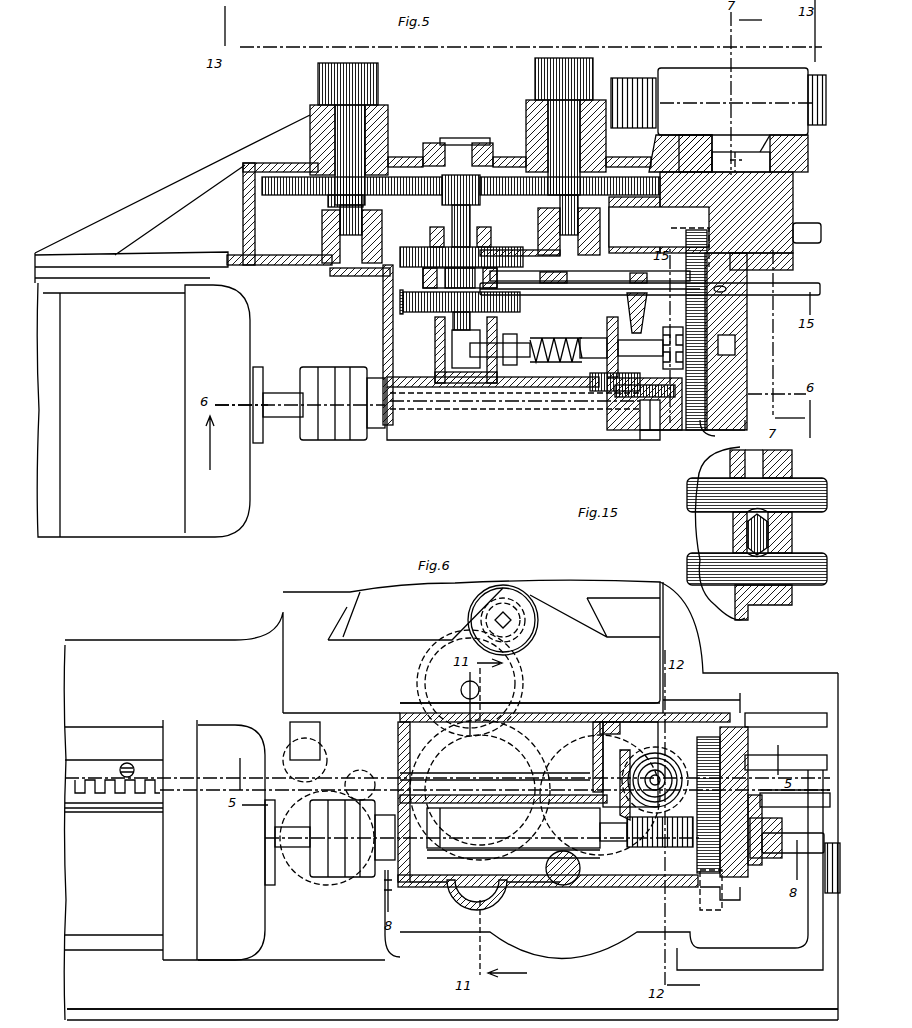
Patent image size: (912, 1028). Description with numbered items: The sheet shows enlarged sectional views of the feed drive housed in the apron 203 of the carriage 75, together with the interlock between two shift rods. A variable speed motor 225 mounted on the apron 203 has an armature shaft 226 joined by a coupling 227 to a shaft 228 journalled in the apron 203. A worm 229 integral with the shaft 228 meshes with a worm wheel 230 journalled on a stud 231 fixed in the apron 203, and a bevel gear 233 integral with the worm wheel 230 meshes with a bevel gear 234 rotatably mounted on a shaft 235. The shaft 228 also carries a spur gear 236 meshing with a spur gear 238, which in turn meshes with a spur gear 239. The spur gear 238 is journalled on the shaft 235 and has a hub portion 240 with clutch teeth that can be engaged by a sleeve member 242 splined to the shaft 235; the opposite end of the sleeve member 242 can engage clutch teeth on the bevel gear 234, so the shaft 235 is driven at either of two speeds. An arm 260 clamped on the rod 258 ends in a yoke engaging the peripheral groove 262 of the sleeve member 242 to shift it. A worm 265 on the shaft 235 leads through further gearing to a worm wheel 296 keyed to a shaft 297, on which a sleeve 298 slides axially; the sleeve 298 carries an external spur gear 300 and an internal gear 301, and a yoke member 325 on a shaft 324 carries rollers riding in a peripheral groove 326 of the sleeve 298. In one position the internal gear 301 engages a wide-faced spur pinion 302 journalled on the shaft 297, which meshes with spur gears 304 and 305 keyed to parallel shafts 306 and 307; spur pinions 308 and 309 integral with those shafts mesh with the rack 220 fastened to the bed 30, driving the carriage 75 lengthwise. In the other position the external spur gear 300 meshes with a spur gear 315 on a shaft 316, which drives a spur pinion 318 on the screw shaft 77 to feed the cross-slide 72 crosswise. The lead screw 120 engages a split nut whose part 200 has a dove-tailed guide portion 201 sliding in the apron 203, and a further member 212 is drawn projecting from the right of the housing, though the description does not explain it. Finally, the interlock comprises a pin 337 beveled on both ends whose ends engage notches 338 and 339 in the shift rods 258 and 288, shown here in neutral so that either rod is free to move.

In FIG. 6, the bed 30 is at (420, 995).
In FIG. 6, the cross-slide 72 is at (309, 593).
In FIG. 6, the carriage 75 is at (202, 650).
In FIG. 6, the screw shaft 77 is at (508, 617).
In FIG. 5, the lead screw 120 is at (643, 80).
In FIG. 6, the lead screw 120 is at (824, 890).
In FIG. 5, the split nut part 200 is at (773, 70).
In FIG. 5, the dove-tailed guide portion 201 is at (770, 150).
In FIG. 5, the apron 203 is at (535, 432).
In FIG. 5, the shaft 212 is at (803, 226).
In FIG. 6, the shaft 212 is at (814, 850).
In FIG. 6, the rack 220 is at (120, 790).
In FIG. 5, the variable speed motor 225 is at (167, 522).
In FIG. 6, the variable speed motor 225 is at (228, 942).
In FIG. 5, the armature shaft 226 is at (286, 418).
In FIG. 6, the armature shaft 226 is at (300, 855).
In FIG. 5, the coupling 227 is at (346, 432).
In FIG. 6, the coupling 227 is at (357, 878).
In FIG. 5, the shaft 228 is at (457, 410).
In FIG. 6, the shaft 228 is at (540, 842).
In FIG. 5, the worm 229 is at (697, 435).
In FIG. 6, the worm 229 is at (700, 898).
In FIG. 5, the worm wheel 230 is at (650, 392).
In FIG. 6, the worm wheel 230 is at (633, 828).
In FIG. 5, the stud 231 is at (650, 425).
In FIG. 6, the stud 231 is at (655, 778).
In FIG. 5, the bevel gear 233 is at (596, 387).
In FIG. 5, the bevel gear 234 is at (611, 330).
In FIG. 6, the bevel gear 234 is at (640, 718).
In FIG. 5, the shaft 235 is at (528, 352).
In FIG. 5, the spur gear 236 is at (700, 425).
In FIG. 6, the spur gear 236 is at (740, 824).
In FIG. 5, the spur gear 238 is at (708, 316).
In FIG. 6, the spur gear 238 is at (731, 717).
In FIG. 5, the spur gear 239 is at (666, 248).
In FIG. 6, the spur gear 239 is at (733, 893).
In FIG. 5, the hub portion 240 is at (675, 328).
In FIG. 5, the sleeve member 242 is at (659, 340).
In FIG. 5, the rod 258 is at (800, 274).
In FIG. 15, the rod 258 is at (808, 482).
In FIG. 6, the rod 258 is at (793, 763).
In FIG. 5, the arm 260 is at (627, 278).
In FIG. 5, the peripheral groove 262 is at (645, 330).
In FIG. 5, the worm 265 is at (546, 360).
In FIG. 15, the rod 288 is at (816, 583).
In FIG. 6, the rod 288 is at (795, 809).
In FIG. 5, the worm wheel 296 is at (432, 318).
In FIG. 5, the shaft 297 is at (453, 334).
In FIG. 5, the sleeve 298 is at (542, 274).
In FIG. 5, the external spur gear 300 is at (509, 246).
In FIG. 6, the external spur gear 300 is at (452, 862).
In FIG. 5, the internal gear 301 is at (479, 224).
In FIG. 5, the spur pinion 302 is at (437, 200).
In FIG. 6, the spur pinion 302 is at (445, 812).
In FIG. 5, the spur gear 304 is at (634, 176).
In FIG. 6, the spur gear 304 is at (571, 712).
In FIG. 5, the spur gear 305 is at (297, 200).
In FIG. 6, the spur gear 305 is at (313, 730).
In FIG. 5, the shaft 306 is at (566, 130).
In FIG. 5, the shaft 307 is at (360, 143).
In FIG. 5, the spur pinion 308 is at (590, 76).
In FIG. 6, the spur pinion 308 is at (582, 782).
In FIG. 5, the spur pinion 309 is at (380, 84).
In FIG. 6, the spur pinion 309 is at (358, 782).
In FIG. 6, the spur gear 315 is at (524, 676).
In FIG. 6, the shaft 316 is at (478, 680).
In FIG. 6, the spur pinion 318 is at (524, 624).
In FIG. 6, the shaft 324 is at (794, 725).
In FIG. 5, the yoke member 325 is at (396, 297).
In FIG. 6, the yoke member 325 is at (511, 764).
In FIG. 5, the peripheral groove 326 is at (444, 278).
In FIG. 15, the pin 337 is at (740, 540).
In FIG. 15, the notch 338 is at (790, 518).
In FIG. 15, the notch 339 is at (770, 556).